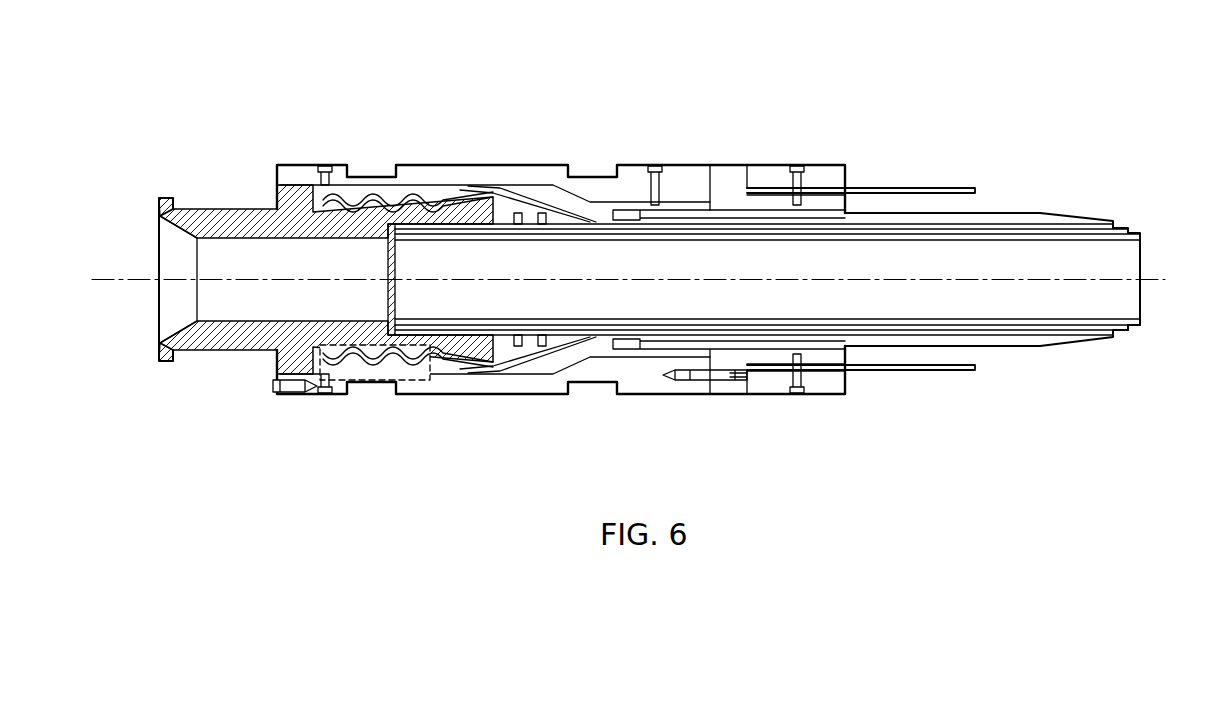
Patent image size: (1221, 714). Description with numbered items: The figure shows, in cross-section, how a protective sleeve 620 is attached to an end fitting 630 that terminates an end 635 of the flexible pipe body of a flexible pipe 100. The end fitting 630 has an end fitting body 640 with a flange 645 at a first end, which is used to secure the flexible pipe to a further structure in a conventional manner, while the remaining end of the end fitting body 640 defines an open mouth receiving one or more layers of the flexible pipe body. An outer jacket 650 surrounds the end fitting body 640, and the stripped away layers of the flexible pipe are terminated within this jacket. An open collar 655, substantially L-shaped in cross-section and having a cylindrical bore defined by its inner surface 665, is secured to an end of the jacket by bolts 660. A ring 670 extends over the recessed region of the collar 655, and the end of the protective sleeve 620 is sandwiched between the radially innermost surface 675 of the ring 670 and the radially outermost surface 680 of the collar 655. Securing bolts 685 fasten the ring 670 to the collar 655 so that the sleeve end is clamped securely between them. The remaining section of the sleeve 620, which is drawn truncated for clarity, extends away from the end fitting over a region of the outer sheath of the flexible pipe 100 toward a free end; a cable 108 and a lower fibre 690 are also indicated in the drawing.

The flexible pipe 100 is at (1100, 375).
The cable 108 is at (1010, 213).
The protective sleeve 620 is at (923, 186).
The end fitting 630 is at (377, 118).
The end of the flexible pipe body 635 is at (490, 303).
The end fitting body 640 is at (232, 345).
The flange 645 is at (160, 216).
The outer jacket 650 is at (625, 182).
The open collar 655 is at (727, 182).
The bolts 660 is at (723, 378).
The inner surface 665 is at (822, 352).
The ring 670 is at (817, 177).
The radially innermost surface 675 is at (777, 175).
The radially outermost surface 680 is at (773, 368).
The securing bolts 685 is at (803, 185).
The optical fiber 690 is at (848, 388).